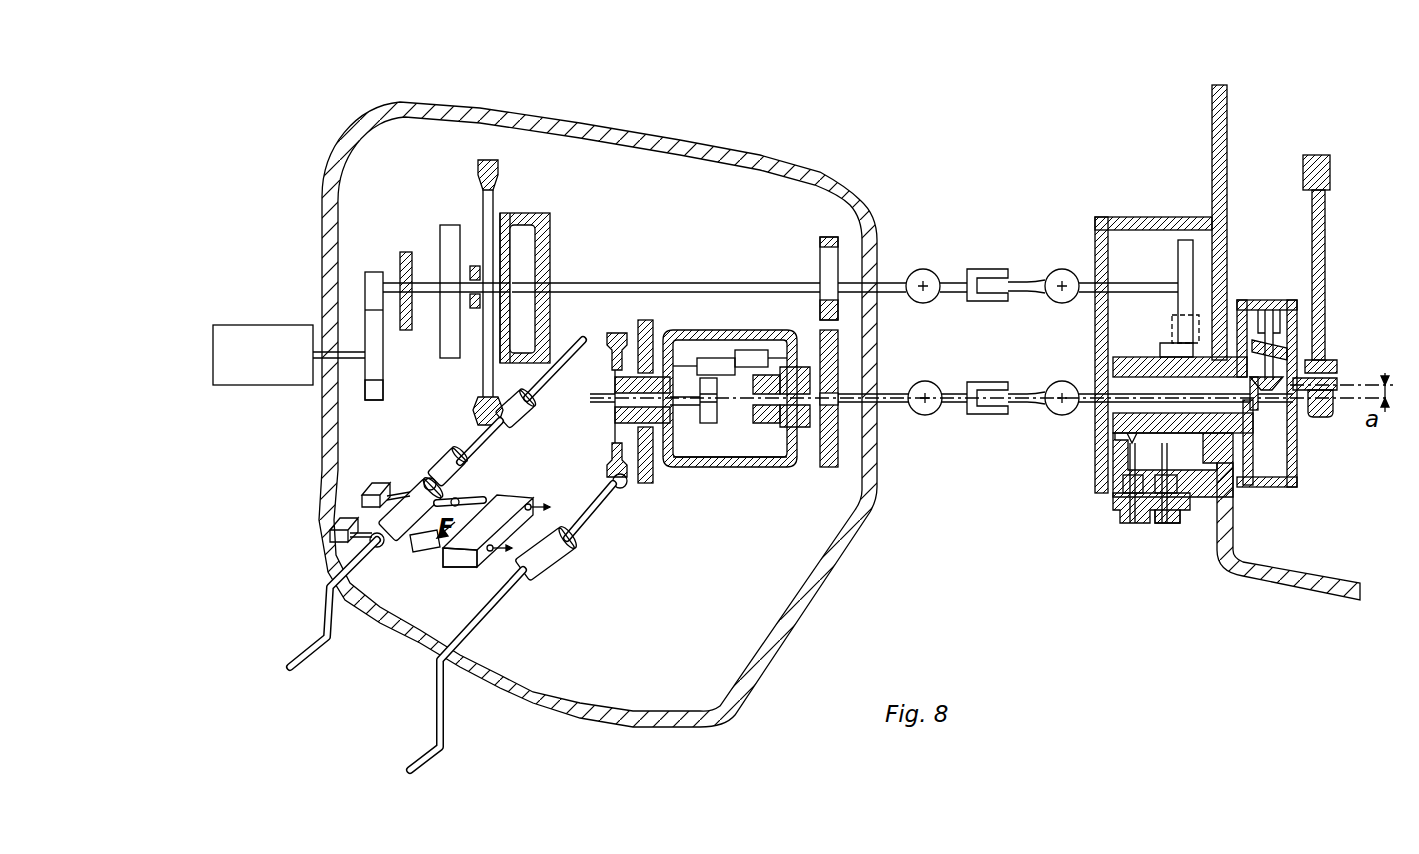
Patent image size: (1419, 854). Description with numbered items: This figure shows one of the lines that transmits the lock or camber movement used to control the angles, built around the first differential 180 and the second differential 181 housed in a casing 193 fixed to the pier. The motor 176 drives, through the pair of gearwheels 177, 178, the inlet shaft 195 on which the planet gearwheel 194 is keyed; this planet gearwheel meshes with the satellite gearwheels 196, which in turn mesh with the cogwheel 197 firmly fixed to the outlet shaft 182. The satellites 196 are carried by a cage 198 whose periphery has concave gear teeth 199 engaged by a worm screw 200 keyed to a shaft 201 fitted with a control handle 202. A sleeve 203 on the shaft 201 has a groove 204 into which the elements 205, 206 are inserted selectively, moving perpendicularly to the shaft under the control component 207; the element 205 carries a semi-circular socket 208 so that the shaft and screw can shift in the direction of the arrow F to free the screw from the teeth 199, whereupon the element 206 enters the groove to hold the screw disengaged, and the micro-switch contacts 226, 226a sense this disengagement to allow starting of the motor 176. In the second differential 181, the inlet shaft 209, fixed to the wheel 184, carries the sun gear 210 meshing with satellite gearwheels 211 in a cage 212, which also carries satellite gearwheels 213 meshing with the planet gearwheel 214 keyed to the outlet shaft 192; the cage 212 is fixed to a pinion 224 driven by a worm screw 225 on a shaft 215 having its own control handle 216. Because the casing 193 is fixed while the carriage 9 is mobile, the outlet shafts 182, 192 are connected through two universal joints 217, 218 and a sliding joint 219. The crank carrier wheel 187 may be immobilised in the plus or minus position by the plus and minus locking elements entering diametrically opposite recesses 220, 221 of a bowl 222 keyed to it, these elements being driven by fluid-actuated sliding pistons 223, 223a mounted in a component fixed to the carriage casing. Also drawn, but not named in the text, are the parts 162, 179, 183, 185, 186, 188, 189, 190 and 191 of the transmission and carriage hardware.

The carriage 9 is at (1220, 104).
The arm 162 is at (1325, 225).
The motor 176 is at (257, 338).
The gearwheel 177 is at (392, 392).
The gearwheel 178 is at (374, 278).
The gear 179 is at (440, 228).
The first differential 180 is at (553, 210).
The second differential 181 is at (662, 330).
The outlet shaft 182 is at (890, 280).
The upper disk 183 is at (822, 250).
The wheel 184 is at (838, 445).
The plate 185 is at (1182, 250).
The hidden element 186 is at (1178, 335).
The crank carrier wheel 187 is at (1297, 482).
The flange 188 is at (1293, 350).
The offset shaft 189 is at (1330, 385).
The pin 190 is at (1268, 310).
The bevel gear 191 is at (1262, 398).
The outlet shaft 192 is at (905, 390).
The casing 193 is at (765, 160).
The planet gearwheel 194 is at (512, 287).
The inlet shaft 195 is at (430, 292).
The satellite gearwheels 196 is at (540, 238).
The cogwheel 197 is at (507, 225).
The cage 198 is at (485, 200).
The concave gear teeth 199 is at (493, 165).
The worm screw 200 is at (520, 412).
The shaft 201 is at (467, 457).
The control handle 202 is at (312, 650).
The sleeve 203 is at (385, 525).
The groove 204 is at (430, 478).
The element 205 is at (530, 495).
The element 206 is at (425, 550).
The control component 207 is at (487, 557).
The socket 208 is at (470, 500).
The inlet shaft 209 is at (798, 430).
The sun gear 210 is at (762, 425).
The satellite gearwheels 211 is at (762, 350).
The cage 212 is at (727, 467).
The satellite gearwheels 213 is at (715, 358).
The planet gearwheel 214 is at (710, 423).
The shaft 215 is at (587, 528).
The control handle 216 is at (430, 748).
The universal joint 217 is at (936, 275).
The universal joint 218 is at (1058, 268).
The sliding joint 219 is at (990, 272).
The recess 220 is at (1128, 440).
The recess 221 is at (1165, 357).
The bowl 222 is at (1115, 362).
The sliding piston 223 is at (1130, 490).
The sliding piston 223a is at (1163, 495).
The pinion 224 is at (612, 372).
The worm screw 225 is at (637, 488).
The micro-switch contact 226 is at (373, 480).
The micro-switch contact 226a is at (340, 532).